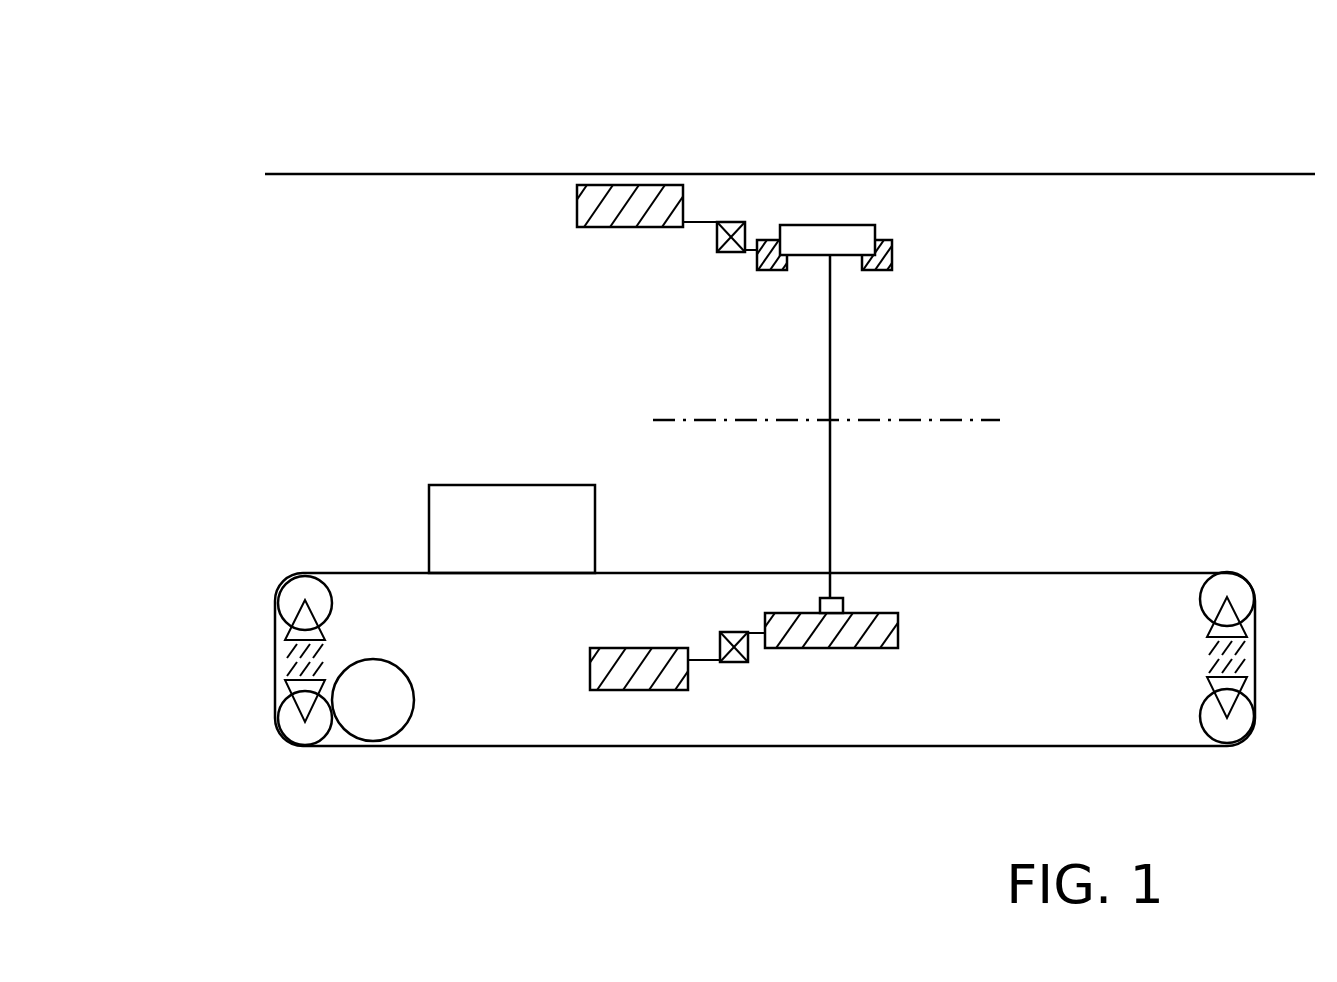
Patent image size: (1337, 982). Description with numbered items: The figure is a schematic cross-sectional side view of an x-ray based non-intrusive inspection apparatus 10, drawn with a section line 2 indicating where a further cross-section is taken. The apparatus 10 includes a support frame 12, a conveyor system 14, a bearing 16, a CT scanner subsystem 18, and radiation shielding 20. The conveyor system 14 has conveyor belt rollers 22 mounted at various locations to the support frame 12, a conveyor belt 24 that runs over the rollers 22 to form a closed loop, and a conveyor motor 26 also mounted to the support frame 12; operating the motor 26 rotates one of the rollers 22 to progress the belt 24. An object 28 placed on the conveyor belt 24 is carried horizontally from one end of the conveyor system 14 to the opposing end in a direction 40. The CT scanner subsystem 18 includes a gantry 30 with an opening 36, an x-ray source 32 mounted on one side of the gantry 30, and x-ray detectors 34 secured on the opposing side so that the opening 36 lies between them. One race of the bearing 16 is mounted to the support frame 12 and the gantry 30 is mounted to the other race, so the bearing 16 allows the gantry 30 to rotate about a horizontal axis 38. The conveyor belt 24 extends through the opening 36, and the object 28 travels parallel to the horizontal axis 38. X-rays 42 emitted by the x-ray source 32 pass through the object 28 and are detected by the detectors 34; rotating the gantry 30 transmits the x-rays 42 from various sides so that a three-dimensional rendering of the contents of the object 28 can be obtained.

The section line 2- 2 is at (817, 462).
The x-ray based non-intrusive inspection apparatus 10 is at (350, 100).
The support frame 12 is at (577, 205).
The conveyor system 14 is at (235, 664).
The bearing 16 is at (717, 238).
The CT scanner subsystem 18 is at (985, 250).
The radiation shielding 20 is at (1155, 172).
The conveyor belt rollers 22 is at (293, 590).
The conveyor belt 24 is at (1020, 571).
The conveyor motor 26 is at (397, 685).
The object 28 is at (494, 538).
The gantry 30 is at (897, 262).
The x-ray source 32 is at (875, 230).
The x-ray detectors 34 is at (843, 603).
The opening 36 is at (880, 270).
The horizontal axis 38 is at (945, 420).
The direction 40 is at (610, 513).
The x-rays 42 is at (830, 390).